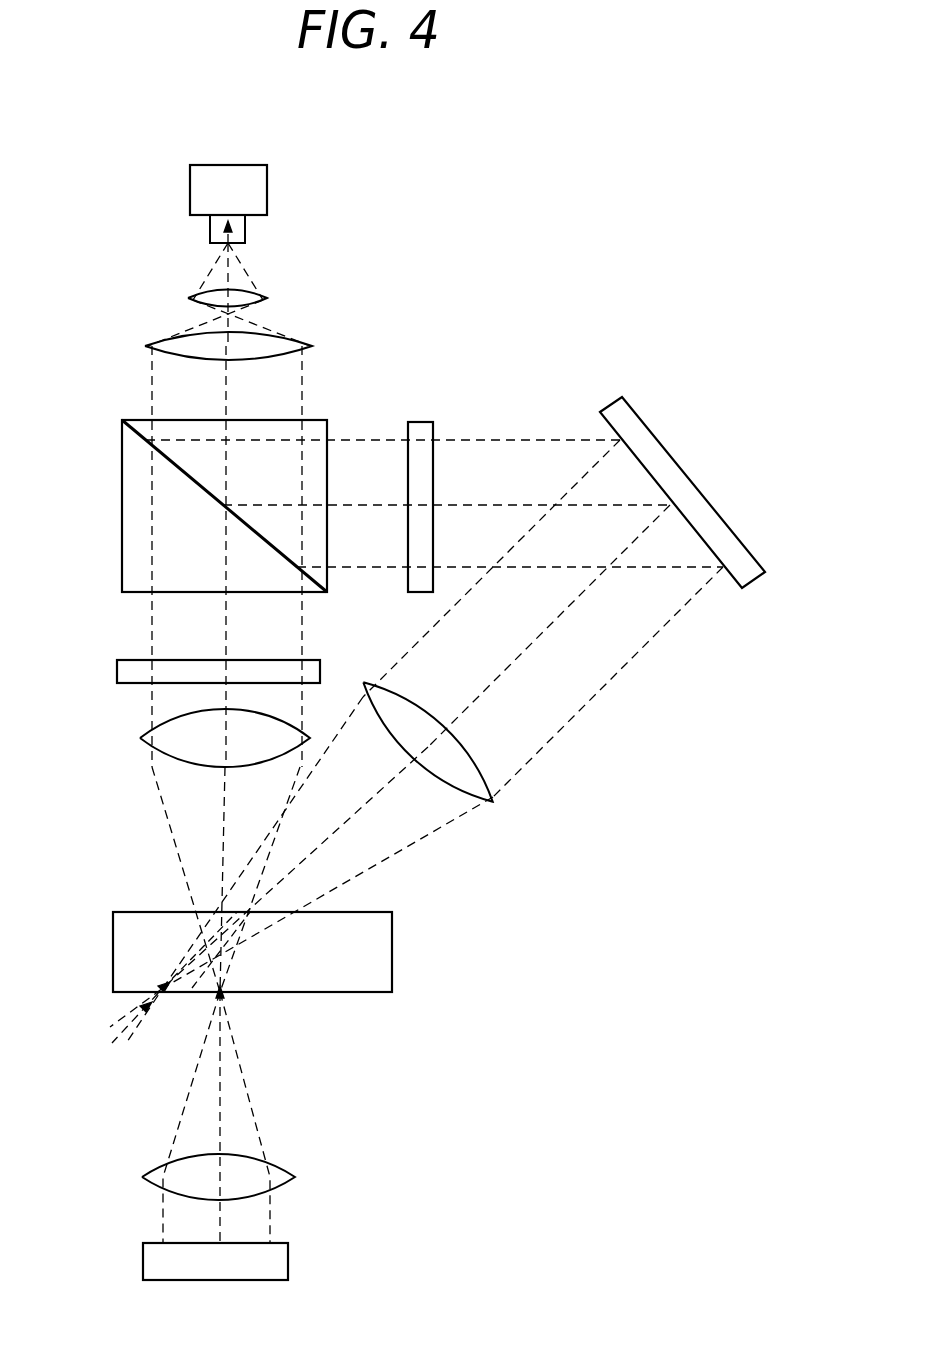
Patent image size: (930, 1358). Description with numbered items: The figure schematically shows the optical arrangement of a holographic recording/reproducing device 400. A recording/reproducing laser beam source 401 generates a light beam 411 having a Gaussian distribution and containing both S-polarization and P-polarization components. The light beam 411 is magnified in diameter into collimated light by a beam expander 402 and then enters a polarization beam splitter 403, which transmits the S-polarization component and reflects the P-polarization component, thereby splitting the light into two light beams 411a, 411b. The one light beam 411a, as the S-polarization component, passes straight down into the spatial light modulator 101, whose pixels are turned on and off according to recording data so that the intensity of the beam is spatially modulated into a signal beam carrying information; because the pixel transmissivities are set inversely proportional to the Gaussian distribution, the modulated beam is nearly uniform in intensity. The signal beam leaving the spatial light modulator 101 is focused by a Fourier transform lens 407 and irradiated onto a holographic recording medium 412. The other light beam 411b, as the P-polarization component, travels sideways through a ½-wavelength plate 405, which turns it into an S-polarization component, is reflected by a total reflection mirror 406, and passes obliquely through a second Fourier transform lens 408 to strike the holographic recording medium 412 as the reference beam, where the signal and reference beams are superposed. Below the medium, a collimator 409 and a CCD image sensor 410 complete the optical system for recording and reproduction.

The holographic recording/reproducing device 400 is at (527, 254).
The recording/reproducing laser beam source 401 is at (190, 185).
The beam expander 402 is at (126, 263).
The polarization beam splitter 403 is at (122, 505).
The ½-wavelength plate 405 is at (420, 424).
The total reflection mirror 406 is at (630, 420).
The Fourier transform lens 407 is at (162, 752).
The Fourier transform lens 408 is at (494, 797).
The collimator 409 is at (290, 1172).
The CCD image sensor 410 is at (289, 1260).
The light beam 411 is at (246, 244).
The light beam 411a is at (150, 613).
The light beam 411b is at (378, 440).
The holographic recording medium 412 is at (393, 953).
The spatial light modulator 101 is at (117, 670).